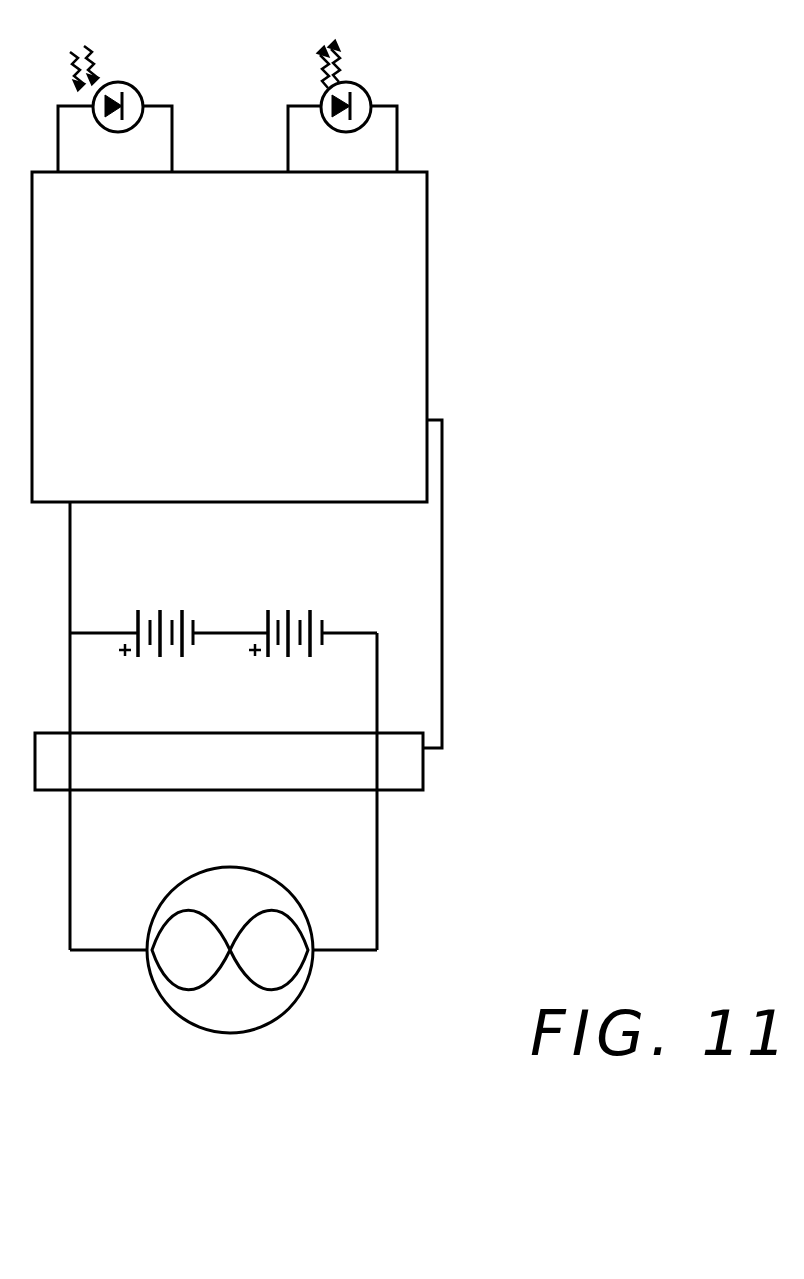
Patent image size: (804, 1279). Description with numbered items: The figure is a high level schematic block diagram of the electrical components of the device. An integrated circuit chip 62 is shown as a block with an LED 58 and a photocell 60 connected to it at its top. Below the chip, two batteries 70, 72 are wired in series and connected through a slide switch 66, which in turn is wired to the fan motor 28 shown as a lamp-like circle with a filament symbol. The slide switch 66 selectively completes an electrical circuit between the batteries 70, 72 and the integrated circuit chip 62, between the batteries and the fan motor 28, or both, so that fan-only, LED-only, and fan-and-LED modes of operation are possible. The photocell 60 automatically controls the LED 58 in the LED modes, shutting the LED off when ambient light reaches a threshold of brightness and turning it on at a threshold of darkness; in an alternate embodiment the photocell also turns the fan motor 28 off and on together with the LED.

The integrated circuit chip 62 is at (382, 258).
The photocell 60 is at (130, 82).
The LED 58 is at (363, 82).
The battery 70 is at (170, 567).
The battery 72 is at (297, 568).
The slide switch 66 is at (405, 778).
The fan motor 28 is at (242, 1023).